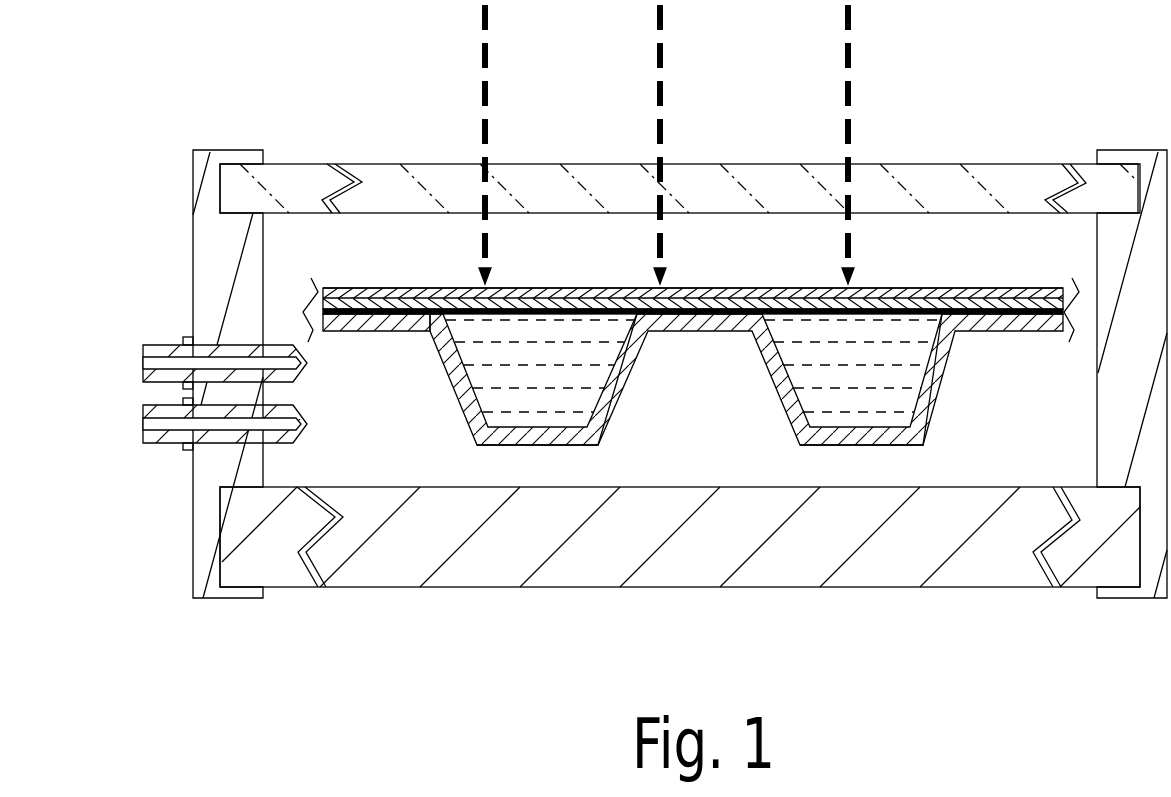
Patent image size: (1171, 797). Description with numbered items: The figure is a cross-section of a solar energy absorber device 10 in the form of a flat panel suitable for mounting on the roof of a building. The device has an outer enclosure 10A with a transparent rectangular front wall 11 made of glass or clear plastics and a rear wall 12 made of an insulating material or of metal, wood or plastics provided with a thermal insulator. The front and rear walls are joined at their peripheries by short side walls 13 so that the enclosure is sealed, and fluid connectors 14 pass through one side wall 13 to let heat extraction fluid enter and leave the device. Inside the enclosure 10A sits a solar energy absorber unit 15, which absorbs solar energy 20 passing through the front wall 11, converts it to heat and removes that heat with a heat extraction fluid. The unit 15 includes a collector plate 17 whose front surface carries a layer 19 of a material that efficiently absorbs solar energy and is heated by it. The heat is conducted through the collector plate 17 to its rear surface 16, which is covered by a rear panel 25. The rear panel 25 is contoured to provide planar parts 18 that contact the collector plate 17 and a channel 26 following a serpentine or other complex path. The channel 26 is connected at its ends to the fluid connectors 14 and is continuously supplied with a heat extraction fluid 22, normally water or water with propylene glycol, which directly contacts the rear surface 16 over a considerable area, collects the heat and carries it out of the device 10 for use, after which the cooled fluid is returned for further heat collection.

The solar energy absorber device 10 is at (427, 66).
The outer enclosure 10A is at (205, 219).
The front wall 11 is at (427, 178).
The rear wall 12 is at (347, 495).
The side walls 13 is at (202, 250).
The fluid connectors 14 is at (168, 340).
The solar energy absorber unit 15 is at (397, 276).
The rear surface 16 is at (558, 316).
The collector plate 17 is at (990, 300).
The planar parts 18 is at (425, 333).
The layer 19 is at (905, 290).
The solar energy 20 is at (485, 95).
The heat extraction fluid 22 is at (488, 378).
The rear panel 25 is at (385, 333).
The channel 26 is at (605, 437).